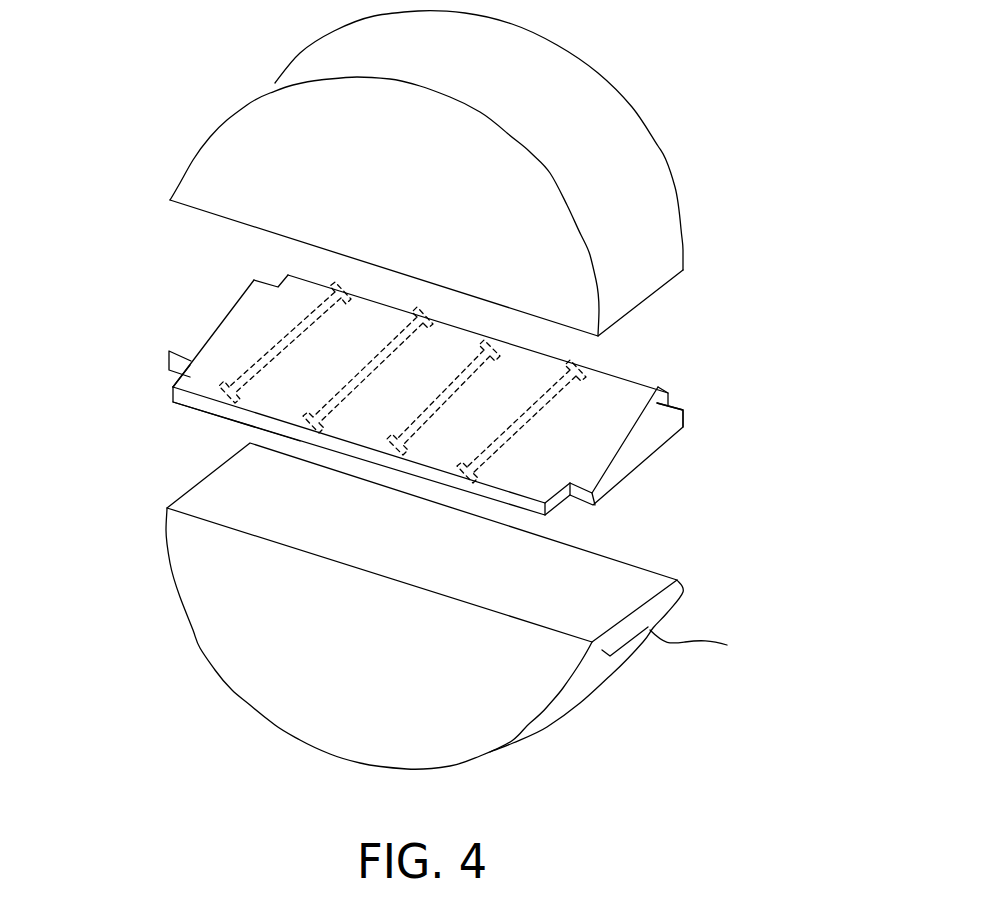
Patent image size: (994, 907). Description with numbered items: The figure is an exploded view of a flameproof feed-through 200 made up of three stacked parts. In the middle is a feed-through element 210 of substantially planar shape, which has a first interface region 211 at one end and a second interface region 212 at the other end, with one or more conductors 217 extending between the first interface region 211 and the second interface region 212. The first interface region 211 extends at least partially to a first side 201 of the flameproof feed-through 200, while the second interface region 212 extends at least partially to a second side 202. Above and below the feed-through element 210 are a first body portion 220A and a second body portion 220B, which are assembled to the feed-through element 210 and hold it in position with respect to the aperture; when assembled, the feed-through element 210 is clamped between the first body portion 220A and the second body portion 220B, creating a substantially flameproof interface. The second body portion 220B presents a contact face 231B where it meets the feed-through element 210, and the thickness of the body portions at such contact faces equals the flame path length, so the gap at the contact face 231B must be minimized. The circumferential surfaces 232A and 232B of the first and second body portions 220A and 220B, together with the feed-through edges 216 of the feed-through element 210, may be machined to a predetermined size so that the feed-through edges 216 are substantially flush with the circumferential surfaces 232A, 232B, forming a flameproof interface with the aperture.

The flameproof feed-through 200 is at (712, 721).
The first side 201 is at (183, 402).
The second side 202 is at (660, 391).
The feed-through element 210 is at (722, 403).
The first interface region 211 is at (137, 380).
The second interface region 212 is at (250, 273).
The feed-through edges 216 is at (193, 345).
The conductors 217 is at (287, 345).
The first body portion 220A is at (700, 173).
The second body portion 220B is at (177, 657).
The contact face 231B is at (634, 574).
The circumferential surface 232A is at (596, 97).
The circumferential surface 232B is at (603, 672).